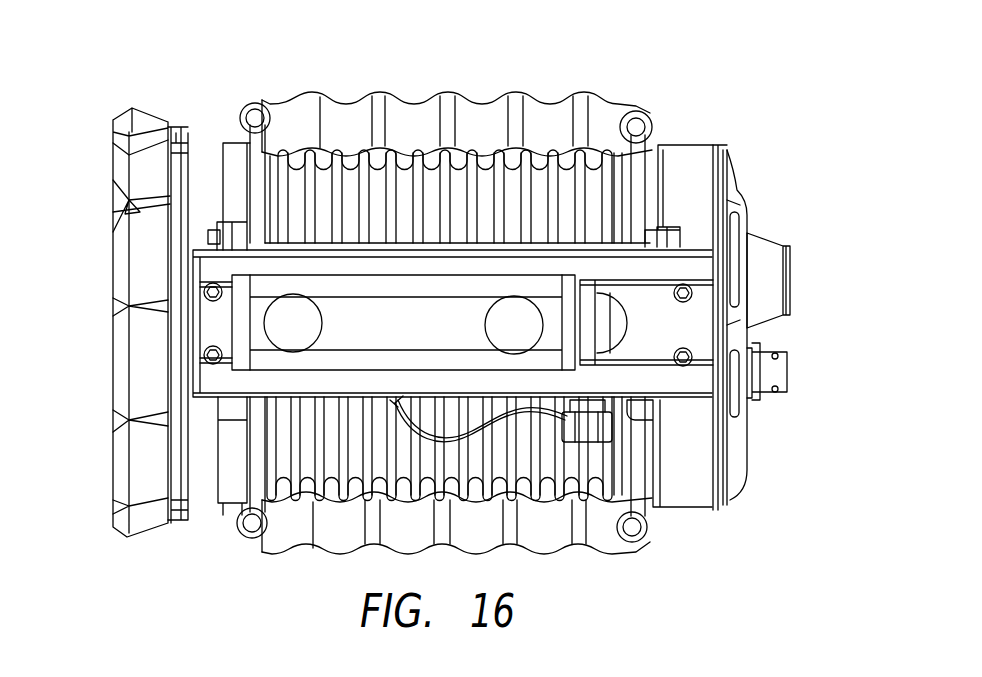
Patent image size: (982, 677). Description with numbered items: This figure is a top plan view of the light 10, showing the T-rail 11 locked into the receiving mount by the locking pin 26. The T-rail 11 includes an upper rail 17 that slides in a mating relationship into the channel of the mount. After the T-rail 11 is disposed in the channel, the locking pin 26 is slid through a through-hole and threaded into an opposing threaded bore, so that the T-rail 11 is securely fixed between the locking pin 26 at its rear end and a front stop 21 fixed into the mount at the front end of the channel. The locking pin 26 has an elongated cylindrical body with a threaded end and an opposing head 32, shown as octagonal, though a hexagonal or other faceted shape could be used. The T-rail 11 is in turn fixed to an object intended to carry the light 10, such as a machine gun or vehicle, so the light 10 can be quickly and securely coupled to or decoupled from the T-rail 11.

The light 10 is at (441, 323).
The T-rail 11 is at (402, 315).
The upper rail 17 is at (308, 362).
The front stop 21 is at (200, 322).
The locking pin 26 is at (588, 303).
The head 32 is at (610, 430).